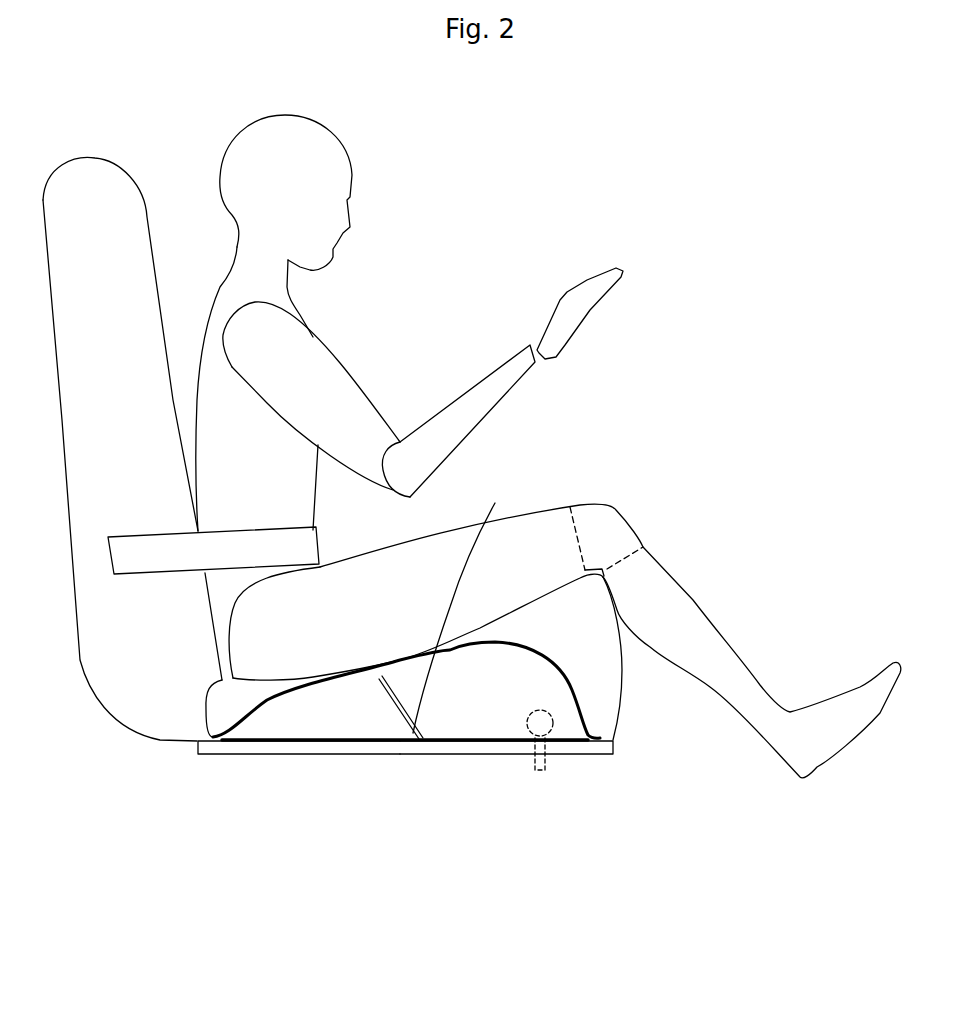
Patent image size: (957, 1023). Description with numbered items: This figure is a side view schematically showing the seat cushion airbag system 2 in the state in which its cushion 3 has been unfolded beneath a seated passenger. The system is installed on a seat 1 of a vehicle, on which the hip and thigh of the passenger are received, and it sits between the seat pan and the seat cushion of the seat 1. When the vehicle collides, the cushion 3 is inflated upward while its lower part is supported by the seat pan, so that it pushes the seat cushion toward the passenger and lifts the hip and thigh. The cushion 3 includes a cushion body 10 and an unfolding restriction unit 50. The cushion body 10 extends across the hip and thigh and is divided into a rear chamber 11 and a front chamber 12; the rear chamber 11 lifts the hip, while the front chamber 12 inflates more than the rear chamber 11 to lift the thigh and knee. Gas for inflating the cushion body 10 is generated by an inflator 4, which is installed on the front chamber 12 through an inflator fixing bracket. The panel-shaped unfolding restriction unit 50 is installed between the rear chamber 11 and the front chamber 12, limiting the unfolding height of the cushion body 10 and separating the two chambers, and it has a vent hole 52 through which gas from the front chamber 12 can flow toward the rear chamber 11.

The seat 1 is at (328, 509).
The seat cushion airbag system 2 is at (578, 675).
The cushion 3 is at (342, 700).
The inflator 4 is at (546, 726).
The cushion body 10 is at (405, 784).
The rear chamber 11 is at (282, 732).
The front chamber 12 is at (506, 760).
The unfolding restriction unit 50 is at (385, 676).
The vent hole 52 is at (466, 601).